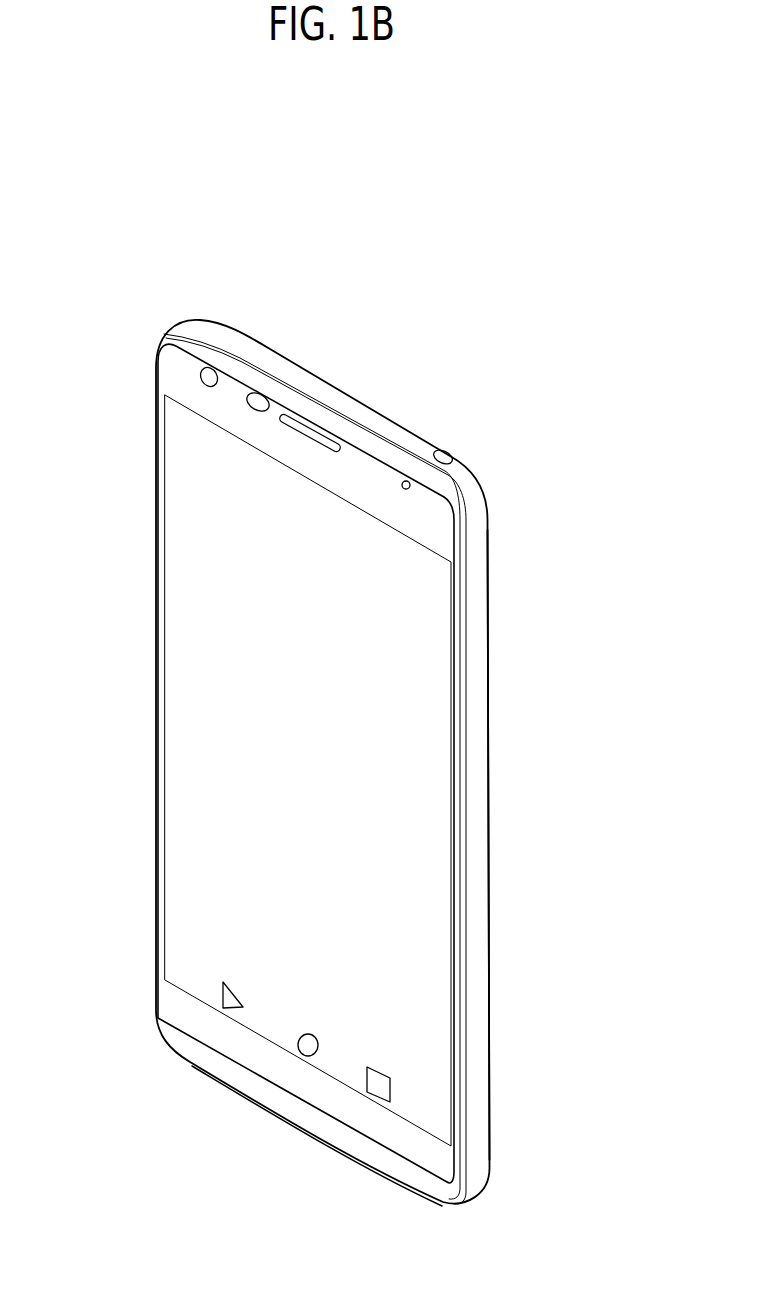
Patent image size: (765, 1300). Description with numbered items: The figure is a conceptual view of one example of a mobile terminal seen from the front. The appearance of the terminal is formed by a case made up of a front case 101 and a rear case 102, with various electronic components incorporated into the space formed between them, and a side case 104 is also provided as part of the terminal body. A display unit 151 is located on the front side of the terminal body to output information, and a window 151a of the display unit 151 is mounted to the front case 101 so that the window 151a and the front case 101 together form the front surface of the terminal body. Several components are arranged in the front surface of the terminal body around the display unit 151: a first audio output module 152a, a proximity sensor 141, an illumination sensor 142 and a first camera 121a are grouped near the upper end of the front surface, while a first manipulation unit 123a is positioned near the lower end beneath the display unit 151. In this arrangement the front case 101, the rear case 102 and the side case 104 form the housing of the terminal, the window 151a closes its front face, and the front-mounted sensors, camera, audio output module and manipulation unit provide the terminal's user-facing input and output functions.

The first camera 121a is at (203, 367).
The proximity sensor 141 is at (254, 395).
The first audio output module 152a is at (324, 443).
The illumination sensor 142 is at (403, 483).
The display unit 151 is at (182, 493).
The window 151a is at (182, 693).
The side case 104 is at (465, 493).
The rear case 102 is at (477, 648).
The front case 101 is at (463, 867).
The first manipulation unit 123a is at (320, 1038).